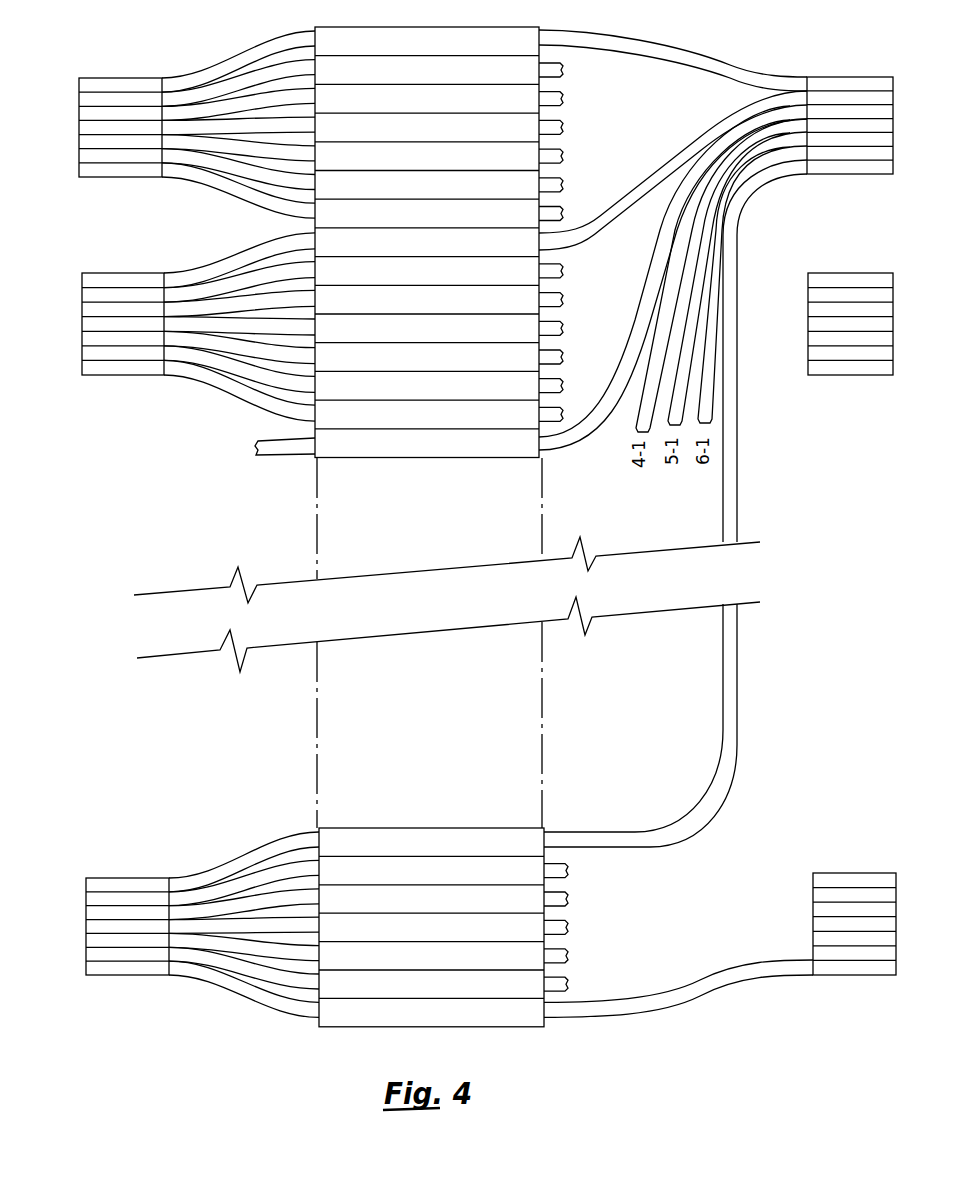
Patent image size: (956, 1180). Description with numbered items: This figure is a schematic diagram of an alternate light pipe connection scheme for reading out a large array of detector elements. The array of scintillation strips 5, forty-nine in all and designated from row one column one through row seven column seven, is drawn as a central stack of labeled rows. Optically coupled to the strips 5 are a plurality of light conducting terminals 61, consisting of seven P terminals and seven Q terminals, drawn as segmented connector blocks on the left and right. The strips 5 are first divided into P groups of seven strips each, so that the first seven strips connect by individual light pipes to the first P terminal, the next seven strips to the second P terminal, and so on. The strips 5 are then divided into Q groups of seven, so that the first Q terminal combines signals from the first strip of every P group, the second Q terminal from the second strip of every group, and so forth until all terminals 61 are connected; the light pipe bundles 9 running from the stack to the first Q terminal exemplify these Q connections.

The scintillation strips 5 is at (513, 100).
The optical fiber cable 9 is at (715, 53).
The light conducting terminals 61 is at (483, 511).